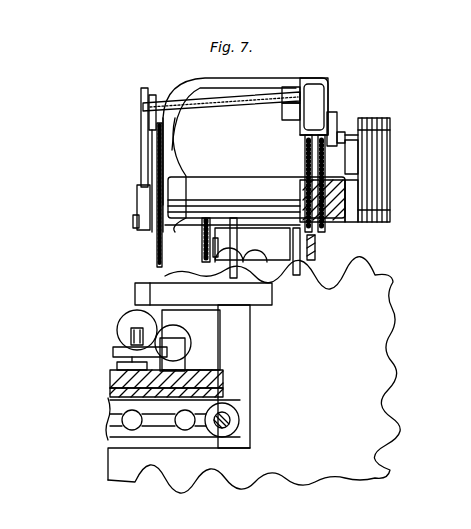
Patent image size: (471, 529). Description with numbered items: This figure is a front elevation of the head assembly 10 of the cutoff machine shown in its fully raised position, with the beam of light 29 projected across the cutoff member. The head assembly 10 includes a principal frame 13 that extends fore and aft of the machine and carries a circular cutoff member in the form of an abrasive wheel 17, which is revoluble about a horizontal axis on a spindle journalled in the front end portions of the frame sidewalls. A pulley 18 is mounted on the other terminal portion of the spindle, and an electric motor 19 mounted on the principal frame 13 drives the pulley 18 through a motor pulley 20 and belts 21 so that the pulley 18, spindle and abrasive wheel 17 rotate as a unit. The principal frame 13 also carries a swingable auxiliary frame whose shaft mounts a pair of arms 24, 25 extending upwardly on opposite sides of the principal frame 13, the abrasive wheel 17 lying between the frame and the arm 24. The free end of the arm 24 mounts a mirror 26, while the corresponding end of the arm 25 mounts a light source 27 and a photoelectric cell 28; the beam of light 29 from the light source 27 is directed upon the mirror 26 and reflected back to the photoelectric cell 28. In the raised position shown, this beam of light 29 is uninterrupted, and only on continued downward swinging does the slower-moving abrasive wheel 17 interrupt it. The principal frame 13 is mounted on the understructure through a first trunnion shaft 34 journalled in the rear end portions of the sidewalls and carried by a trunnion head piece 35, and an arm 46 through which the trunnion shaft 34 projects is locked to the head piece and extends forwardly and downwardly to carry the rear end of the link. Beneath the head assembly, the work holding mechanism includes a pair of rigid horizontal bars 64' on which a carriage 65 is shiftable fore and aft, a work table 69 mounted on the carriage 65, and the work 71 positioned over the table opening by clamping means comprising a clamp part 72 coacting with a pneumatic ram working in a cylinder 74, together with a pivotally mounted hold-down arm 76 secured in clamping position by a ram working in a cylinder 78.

The head assembly 10 is at (250, 146).
The principal frame 13 is at (213, 186).
The abrasive wheel 17 is at (156, 247).
The pulley 18 is at (386, 201).
The electric motor 19 is at (172, 150).
The motor pulley 20 is at (362, 120).
The belts 21 is at (381, 162).
The arm 24 is at (142, 137).
The arm 25 is at (320, 152).
The mirror 26 is at (153, 95).
The light source 27 is at (290, 87).
The photoelectric cell 28 is at (292, 121).
The beam of light 29 is at (262, 98).
The first trunnion shaft 34 is at (293, 243).
The trunnion head piece 35 is at (217, 250).
The arm 46 is at (292, 272).
The rigid horizontal bars 64' is at (252, 420).
The carriage 65 is at (206, 407).
The work table 69 is at (226, 378).
The work 71 is at (135, 350).
The clamp part 72 is at (176, 357).
The cylinder 74 is at (173, 334).
The hold-down arm 76 is at (130, 340).
The cylinder 78 is at (123, 330).